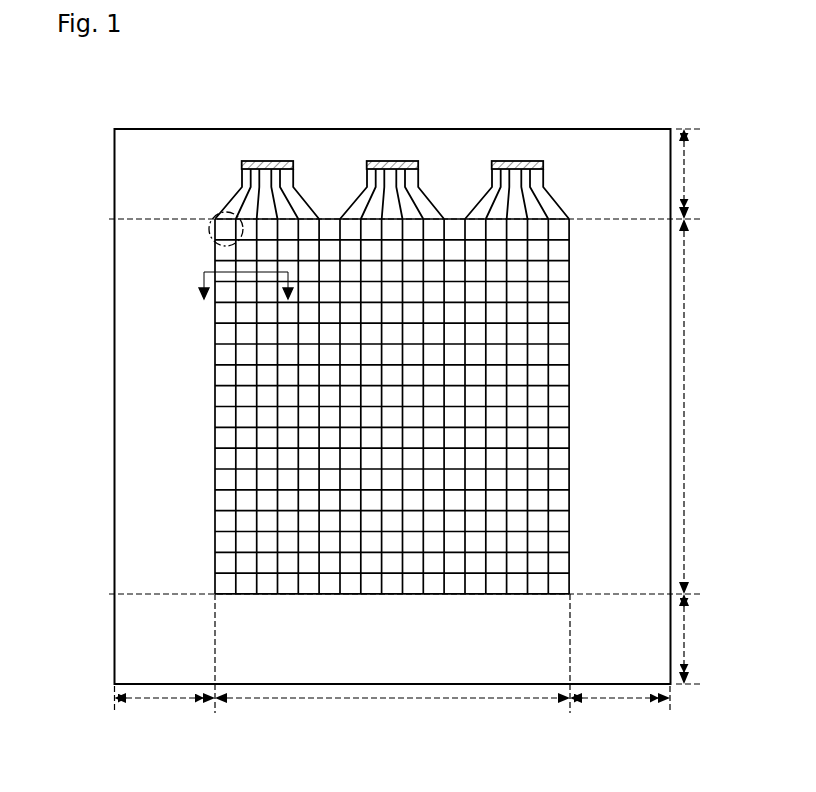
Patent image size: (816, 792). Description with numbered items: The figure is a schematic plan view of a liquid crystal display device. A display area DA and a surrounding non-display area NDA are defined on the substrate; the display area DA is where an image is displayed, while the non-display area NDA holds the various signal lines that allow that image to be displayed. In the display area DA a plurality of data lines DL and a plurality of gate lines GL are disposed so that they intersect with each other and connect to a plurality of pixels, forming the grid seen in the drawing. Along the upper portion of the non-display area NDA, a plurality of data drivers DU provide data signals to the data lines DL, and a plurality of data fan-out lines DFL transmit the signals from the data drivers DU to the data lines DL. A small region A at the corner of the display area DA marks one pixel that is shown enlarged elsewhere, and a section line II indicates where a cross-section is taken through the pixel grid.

The data driver DU is at (270, 161).
The data fan-out line DFL is at (232, 207).
The region A is at (211, 224).
The data line DL is at (215, 315).
The gate line GL is at (227, 324).
The section line II-II' II is at (239, 298).
The display area DA is at (467, 476).
The non-display area NDA is at (427, 431).